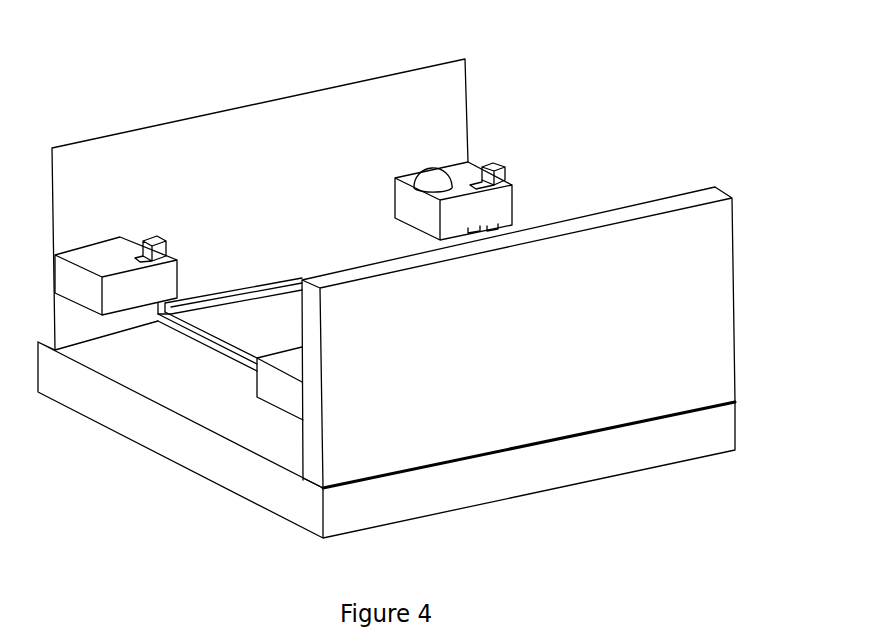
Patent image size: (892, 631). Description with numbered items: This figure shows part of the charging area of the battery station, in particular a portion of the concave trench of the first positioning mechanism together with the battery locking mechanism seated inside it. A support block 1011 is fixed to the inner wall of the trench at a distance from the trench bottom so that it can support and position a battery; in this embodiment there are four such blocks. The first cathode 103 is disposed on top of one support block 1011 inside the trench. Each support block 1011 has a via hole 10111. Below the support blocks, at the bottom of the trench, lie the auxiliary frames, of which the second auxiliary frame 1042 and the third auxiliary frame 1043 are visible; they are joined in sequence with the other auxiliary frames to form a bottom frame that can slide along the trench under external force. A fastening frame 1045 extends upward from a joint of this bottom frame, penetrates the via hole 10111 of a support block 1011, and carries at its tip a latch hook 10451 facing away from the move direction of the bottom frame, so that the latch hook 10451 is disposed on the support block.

The support block 1011 is at (95, 262).
The via hole 10111 is at (135, 260).
The second auxiliary frame 1042 is at (242, 302).
The third auxiliary frame 1043 is at (217, 348).
The first cathode 103 is at (435, 177).
The latch hook 10451 is at (490, 164).
The fastening frame 1045 is at (507, 183).